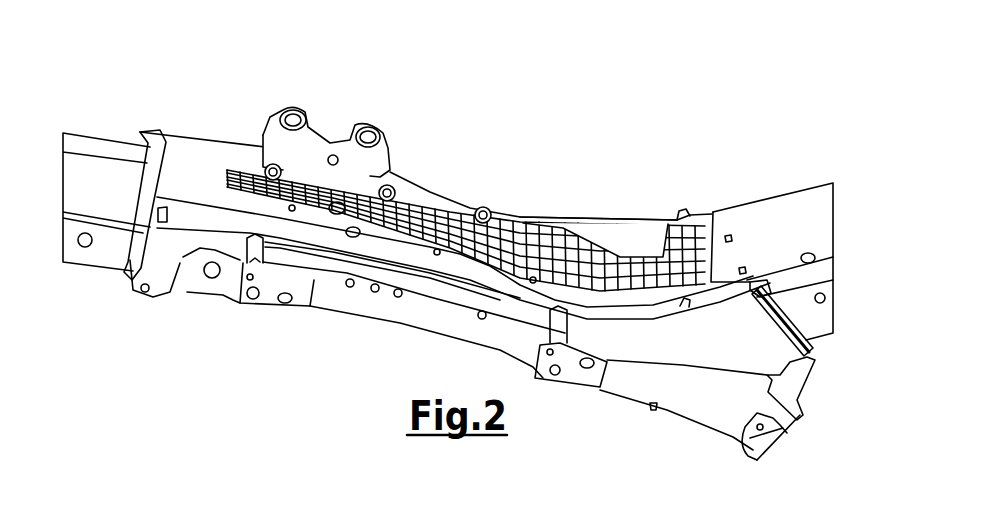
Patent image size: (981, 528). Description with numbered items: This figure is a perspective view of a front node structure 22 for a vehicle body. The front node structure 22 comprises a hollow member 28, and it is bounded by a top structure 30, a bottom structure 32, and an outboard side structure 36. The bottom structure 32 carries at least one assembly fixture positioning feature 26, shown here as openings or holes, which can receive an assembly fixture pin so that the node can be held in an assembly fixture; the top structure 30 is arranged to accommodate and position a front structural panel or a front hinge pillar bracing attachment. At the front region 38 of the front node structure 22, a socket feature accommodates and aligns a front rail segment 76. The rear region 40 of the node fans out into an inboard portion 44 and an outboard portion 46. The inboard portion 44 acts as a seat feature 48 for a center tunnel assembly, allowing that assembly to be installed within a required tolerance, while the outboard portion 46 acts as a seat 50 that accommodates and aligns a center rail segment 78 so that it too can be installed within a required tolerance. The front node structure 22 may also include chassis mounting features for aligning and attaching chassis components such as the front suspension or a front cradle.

The front node structure 22 is at (650, 215).
The assembly fixture positioning feature 26 is at (253, 302).
The hollow member 28 is at (239, 141).
The top structure 30 is at (532, 213).
The bottom structure 32 is at (396, 278).
The outboard side structure 36 is at (588, 238).
The front region 38 is at (158, 131).
The rear region 40 is at (715, 209).
The inboard portion 44 is at (745, 445).
The outboard portion 46 is at (809, 352).
The seat feature 48 is at (802, 397).
The seat 50 is at (742, 286).
The front rail segment 76 is at (103, 153).
The center rail segment 78 is at (830, 284).